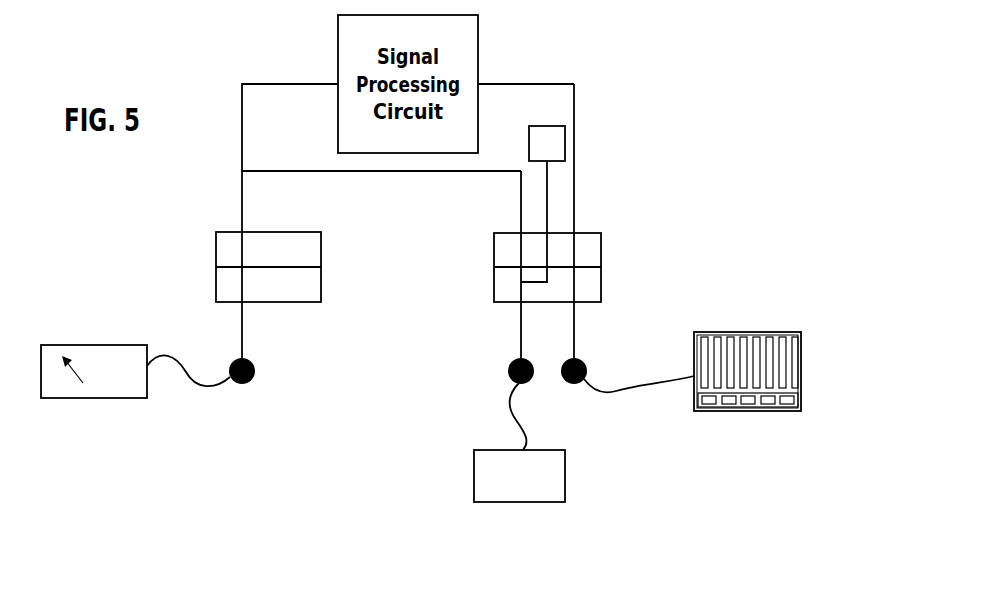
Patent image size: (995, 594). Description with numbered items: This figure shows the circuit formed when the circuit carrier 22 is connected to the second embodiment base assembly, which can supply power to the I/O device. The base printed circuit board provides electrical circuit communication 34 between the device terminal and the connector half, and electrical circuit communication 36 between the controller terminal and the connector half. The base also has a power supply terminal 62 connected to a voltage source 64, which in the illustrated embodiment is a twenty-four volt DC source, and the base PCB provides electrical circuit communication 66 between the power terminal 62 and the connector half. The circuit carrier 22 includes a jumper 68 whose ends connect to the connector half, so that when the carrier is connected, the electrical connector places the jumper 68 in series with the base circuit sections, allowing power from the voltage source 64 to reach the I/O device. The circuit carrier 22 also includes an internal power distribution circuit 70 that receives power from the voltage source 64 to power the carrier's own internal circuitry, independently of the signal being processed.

The circuit carrier 22 is at (278, 70).
The electrical circuit communication 34 is at (244, 326).
The electrical circuit communication 36 is at (576, 330).
The power supply terminal 62 is at (507, 369).
The voltage source 64 is at (473, 463).
The electrical circuit communication 66 is at (519, 330).
The jumper 68 is at (427, 172).
The internal power distribution circuit 70 is at (549, 196).